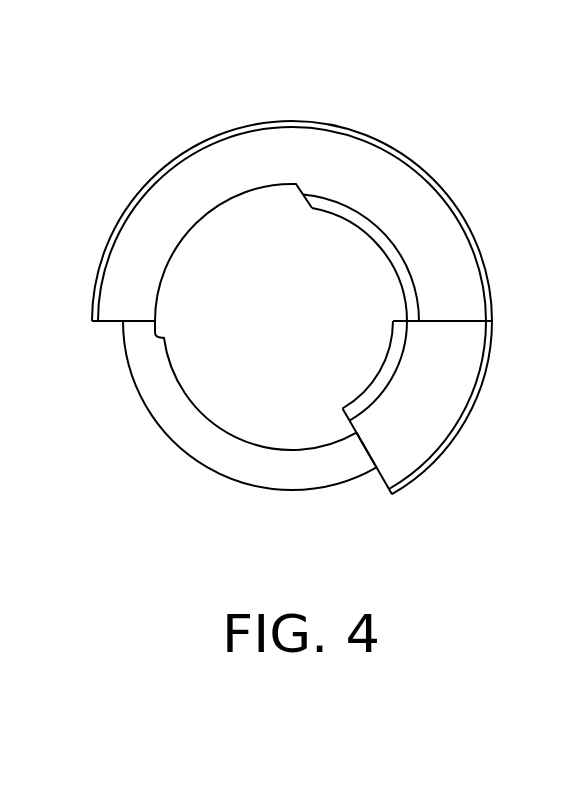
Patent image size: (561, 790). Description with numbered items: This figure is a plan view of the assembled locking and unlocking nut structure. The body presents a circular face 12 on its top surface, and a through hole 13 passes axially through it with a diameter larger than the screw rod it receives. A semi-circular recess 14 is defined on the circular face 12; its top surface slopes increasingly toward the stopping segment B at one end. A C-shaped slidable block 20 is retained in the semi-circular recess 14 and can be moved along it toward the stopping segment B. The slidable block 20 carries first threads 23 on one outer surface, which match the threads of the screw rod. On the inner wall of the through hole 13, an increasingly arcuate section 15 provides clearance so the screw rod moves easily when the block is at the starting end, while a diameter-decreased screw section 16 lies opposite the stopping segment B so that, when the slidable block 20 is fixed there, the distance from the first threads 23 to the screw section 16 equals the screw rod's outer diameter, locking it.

The circular face 12 is at (378, 163).
The through hole 13 is at (190, 372).
The semi-circular recess 14 is at (208, 448).
The arcuate section 15 is at (193, 245).
The diameter-decreased screw section 16 is at (398, 275).
The slidable block 20 is at (475, 352).
The first threads 23 is at (362, 403).
The stopping segment B is at (135, 333).